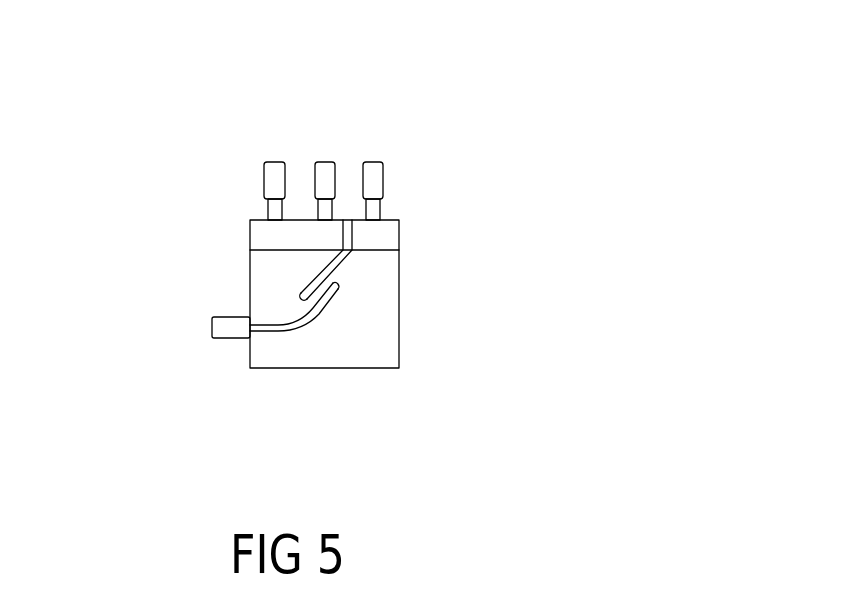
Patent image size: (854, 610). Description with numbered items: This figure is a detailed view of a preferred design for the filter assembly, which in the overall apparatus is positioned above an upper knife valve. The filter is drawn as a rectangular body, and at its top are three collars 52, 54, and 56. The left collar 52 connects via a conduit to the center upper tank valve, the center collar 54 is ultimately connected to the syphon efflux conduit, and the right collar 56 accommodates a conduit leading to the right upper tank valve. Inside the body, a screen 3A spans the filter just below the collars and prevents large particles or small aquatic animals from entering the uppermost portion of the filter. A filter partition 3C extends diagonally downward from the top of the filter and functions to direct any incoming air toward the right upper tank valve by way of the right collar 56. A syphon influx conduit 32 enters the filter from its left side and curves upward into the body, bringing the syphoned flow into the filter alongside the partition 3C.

The left collar 52 is at (206, 153).
The center collar 54 is at (336, 181).
The right collar 56 is at (384, 185).
The screen 3A is at (268, 249).
The filter partition 3C is at (347, 264).
The syphon influx conduit 32 is at (300, 326).